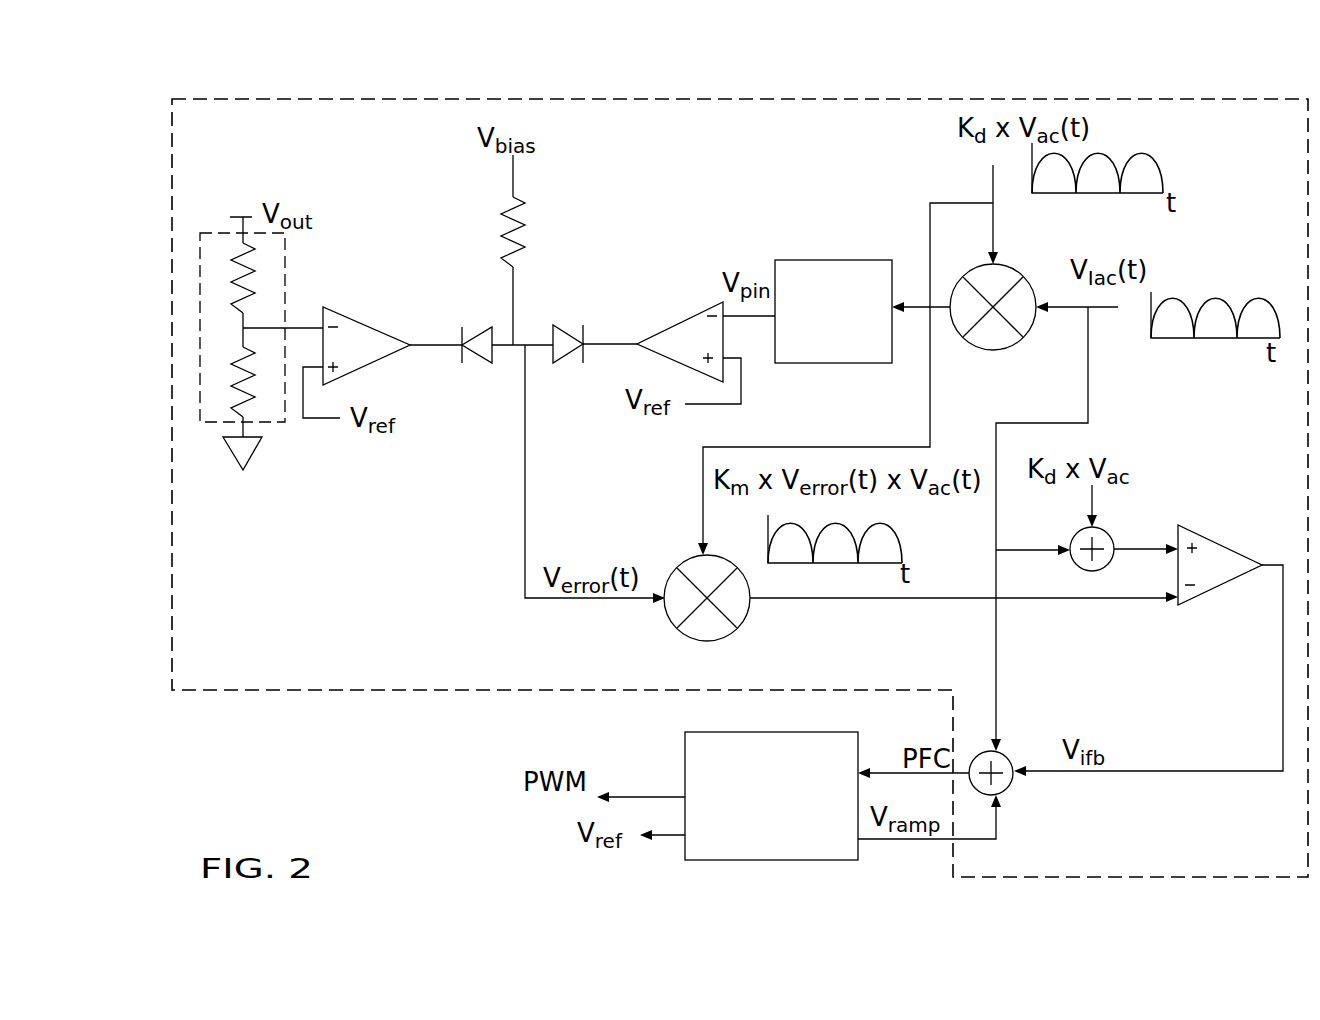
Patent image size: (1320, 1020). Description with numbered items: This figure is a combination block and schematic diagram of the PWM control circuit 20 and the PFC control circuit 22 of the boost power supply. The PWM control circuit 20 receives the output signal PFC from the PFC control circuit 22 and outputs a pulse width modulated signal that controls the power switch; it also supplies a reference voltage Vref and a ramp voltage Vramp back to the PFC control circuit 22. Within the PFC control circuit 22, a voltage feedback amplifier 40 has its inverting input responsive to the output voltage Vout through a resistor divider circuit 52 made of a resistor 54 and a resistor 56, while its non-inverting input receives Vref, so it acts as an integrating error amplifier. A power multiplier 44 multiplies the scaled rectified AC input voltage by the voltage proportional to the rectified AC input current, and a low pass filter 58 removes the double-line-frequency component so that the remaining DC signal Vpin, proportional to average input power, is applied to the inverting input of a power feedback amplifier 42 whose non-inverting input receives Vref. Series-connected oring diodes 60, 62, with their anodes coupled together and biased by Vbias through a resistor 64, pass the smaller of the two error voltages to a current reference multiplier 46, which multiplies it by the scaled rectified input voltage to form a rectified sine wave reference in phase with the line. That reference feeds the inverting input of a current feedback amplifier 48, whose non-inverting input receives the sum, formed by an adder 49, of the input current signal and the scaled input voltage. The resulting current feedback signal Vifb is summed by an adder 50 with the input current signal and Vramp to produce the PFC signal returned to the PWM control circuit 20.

The PWM control circuit 20 is at (685, 773).
The PFC control circuit 22 is at (922, 99).
The voltage feedback amplifier 40 is at (373, 327).
The power feedback amplifier 42 is at (673, 320).
The power multiplier 44 is at (1007, 270).
The current reference multiplier 46 is at (750, 610).
The current feedback amplifier 48 is at (1200, 595).
The adder 49 is at (1108, 537).
The adder 50 is at (1007, 787).
The resistor divider circuit 52 is at (208, 233).
The resistor 54 is at (250, 280).
The resistor 56 is at (255, 390).
The low pass filter 58 is at (847, 260).
The oring diode 60 is at (480, 363).
The oring diode 62 is at (562, 322).
The resistor 64 is at (530, 233).